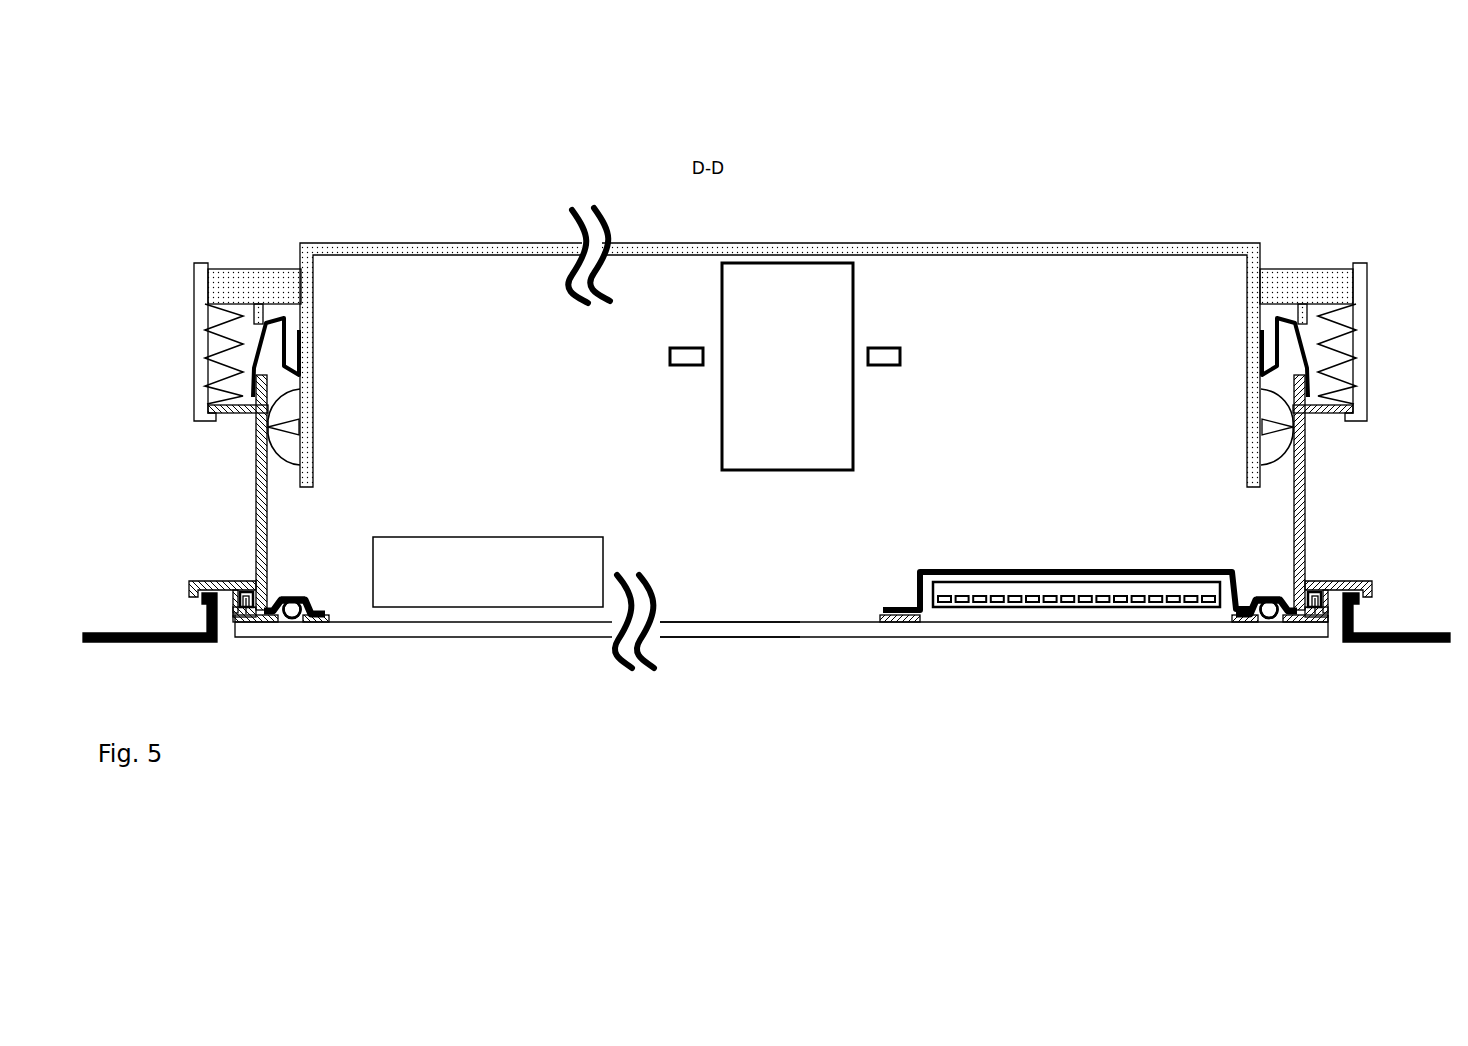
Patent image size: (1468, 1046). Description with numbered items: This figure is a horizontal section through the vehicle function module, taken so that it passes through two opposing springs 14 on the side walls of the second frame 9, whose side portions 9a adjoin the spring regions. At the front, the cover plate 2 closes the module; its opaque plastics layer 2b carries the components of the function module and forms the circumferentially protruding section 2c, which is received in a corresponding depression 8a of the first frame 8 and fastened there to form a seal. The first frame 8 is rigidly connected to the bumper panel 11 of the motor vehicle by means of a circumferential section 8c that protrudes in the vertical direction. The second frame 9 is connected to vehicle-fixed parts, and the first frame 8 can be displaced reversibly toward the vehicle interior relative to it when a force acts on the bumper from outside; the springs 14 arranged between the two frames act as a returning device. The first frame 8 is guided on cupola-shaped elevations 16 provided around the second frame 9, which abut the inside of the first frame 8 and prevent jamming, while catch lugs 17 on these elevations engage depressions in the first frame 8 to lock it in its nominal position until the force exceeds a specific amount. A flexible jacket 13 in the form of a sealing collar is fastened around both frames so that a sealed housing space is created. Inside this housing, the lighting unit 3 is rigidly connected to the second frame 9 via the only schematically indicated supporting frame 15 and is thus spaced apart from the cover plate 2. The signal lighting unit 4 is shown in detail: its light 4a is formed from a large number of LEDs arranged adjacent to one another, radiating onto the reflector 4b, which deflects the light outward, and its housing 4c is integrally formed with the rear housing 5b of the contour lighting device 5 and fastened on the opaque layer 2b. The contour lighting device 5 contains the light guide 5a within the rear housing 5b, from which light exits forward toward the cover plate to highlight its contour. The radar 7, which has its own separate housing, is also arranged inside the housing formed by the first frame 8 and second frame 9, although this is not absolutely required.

The cover plate 2 is at (831, 637).
The opaque plastics layer 2b is at (733, 628).
The circumferentially protruding section 2c is at (245, 630).
The lighting unit 3 is at (779, 288).
The signal lighting unit 4 is at (1058, 572).
The light 4a is at (982, 604).
The reflector 4b is at (970, 572).
The housing 4c is at (918, 590).
The contour lighting device 5 is at (298, 596).
The light guide 5a is at (291, 619).
The rear housing 5b is at (284, 594).
The radar 7 is at (503, 537).
The first frame 8 is at (1307, 475).
The depression 8a is at (243, 590).
The circumferential section 8c is at (196, 580).
The second frame 9 is at (957, 243).
The cover side portion 9a is at (245, 268).
The bumper panel 11 is at (137, 645).
The flexible jacket 13 is at (291, 338).
The spring 14 is at (212, 322).
The supporting frame 15 is at (690, 348).
The cupola-shaped elevation 16 is at (288, 414).
The catch lug 17 is at (284, 440).